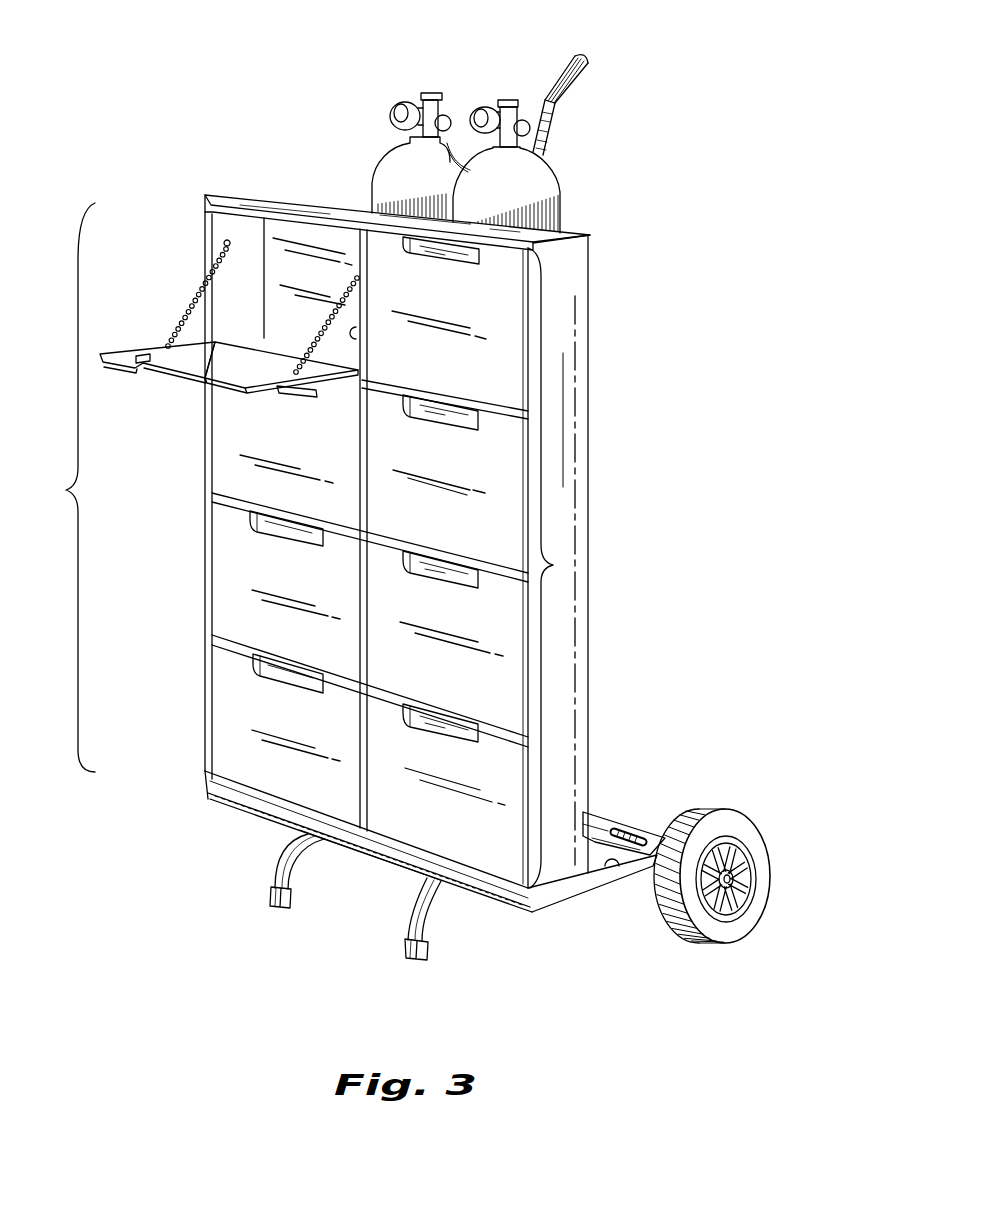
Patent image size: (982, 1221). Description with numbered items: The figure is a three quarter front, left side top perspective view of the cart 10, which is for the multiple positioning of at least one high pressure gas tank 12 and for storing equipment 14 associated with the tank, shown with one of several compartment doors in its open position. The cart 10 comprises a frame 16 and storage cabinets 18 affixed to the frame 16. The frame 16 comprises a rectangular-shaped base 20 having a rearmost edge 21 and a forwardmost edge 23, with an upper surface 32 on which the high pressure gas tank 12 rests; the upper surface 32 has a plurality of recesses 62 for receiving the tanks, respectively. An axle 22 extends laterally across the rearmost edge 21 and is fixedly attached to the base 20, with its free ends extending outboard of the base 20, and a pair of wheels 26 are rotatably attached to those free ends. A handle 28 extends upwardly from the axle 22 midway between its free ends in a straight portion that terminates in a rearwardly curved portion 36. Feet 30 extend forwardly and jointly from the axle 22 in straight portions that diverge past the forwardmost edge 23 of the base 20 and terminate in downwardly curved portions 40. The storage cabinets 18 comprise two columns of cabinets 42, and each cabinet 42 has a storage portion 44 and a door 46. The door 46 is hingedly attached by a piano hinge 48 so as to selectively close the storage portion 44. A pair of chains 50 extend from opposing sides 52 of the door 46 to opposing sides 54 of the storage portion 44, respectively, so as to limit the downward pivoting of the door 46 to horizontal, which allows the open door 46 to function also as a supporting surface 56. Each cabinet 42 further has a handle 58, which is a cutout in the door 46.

The cart 10 is at (67, 99).
The high pressure gas tank 12 is at (475, 157).
The equipment 14 is at (303, 267).
The frame 16 is at (631, 826).
The storage cabinets 18 is at (262, 562).
The base 20 is at (586, 910).
The rearmost edge 21 is at (596, 815).
The axle 22 is at (729, 886).
The forwardmost edge 23 is at (453, 887).
The wheels 26 is at (729, 803).
The handle 28 is at (580, 96).
The feet 30 is at (413, 879).
The upper surface 32 is at (655, 845).
The rearwardly curved portion 36 is at (553, 82).
The downwardly curved portions 40 is at (404, 934).
The cabinets 42 is at (306, 545).
The storage portion 44 is at (295, 231).
The door 46 is at (157, 368).
The piano hinge 48 is at (290, 346).
The chains 50 is at (347, 313).
The opposing sides of the door 52 is at (140, 352).
The opposing sides of the storage portion 54 is at (204, 231).
The supporting surface 56 is at (259, 378).
The handle 58 is at (460, 271).
The recesses 62 is at (614, 865).